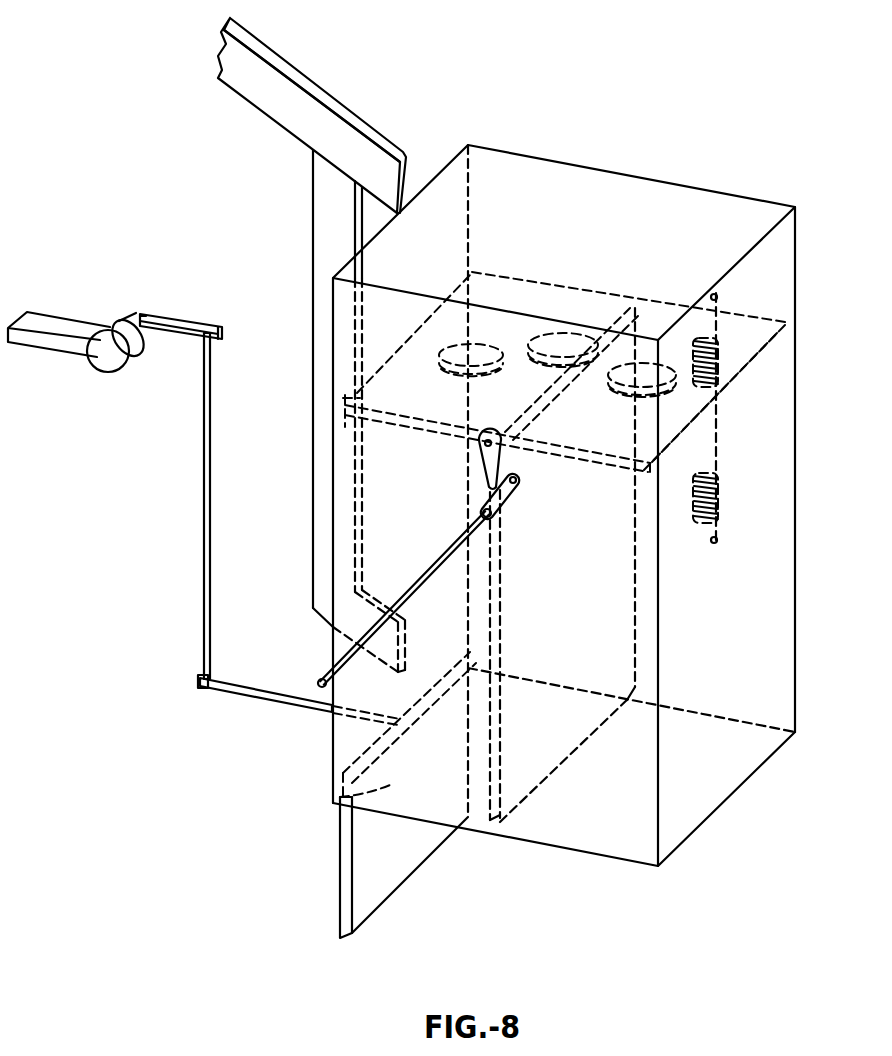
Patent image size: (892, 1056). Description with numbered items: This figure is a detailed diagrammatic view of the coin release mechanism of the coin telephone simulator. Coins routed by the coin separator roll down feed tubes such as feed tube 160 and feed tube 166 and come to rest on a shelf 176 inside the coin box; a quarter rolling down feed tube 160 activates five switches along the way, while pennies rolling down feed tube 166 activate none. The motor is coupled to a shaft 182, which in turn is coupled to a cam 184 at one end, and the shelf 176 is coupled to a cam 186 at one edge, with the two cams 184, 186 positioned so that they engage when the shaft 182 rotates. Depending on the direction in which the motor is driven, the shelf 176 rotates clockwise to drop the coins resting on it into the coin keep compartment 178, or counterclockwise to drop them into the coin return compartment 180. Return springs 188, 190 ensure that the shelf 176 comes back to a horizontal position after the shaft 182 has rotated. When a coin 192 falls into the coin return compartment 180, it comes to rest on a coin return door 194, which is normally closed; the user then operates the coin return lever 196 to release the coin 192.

The feed tube 160 is at (346, 112).
The feed tube 166 is at (313, 523).
The shelf 176 is at (758, 345).
The coin keep compartment 178 is at (697, 785).
The coin return compartment 180 is at (332, 790).
The shaft 182 is at (323, 678).
The cam 184 is at (505, 513).
The cam 186 is at (507, 457).
The return spring 188 is at (720, 368).
The return spring 190 is at (721, 491).
The coin 192 is at (557, 320).
The coin return door 194 is at (340, 902).
The coin return lever 196 is at (113, 372).